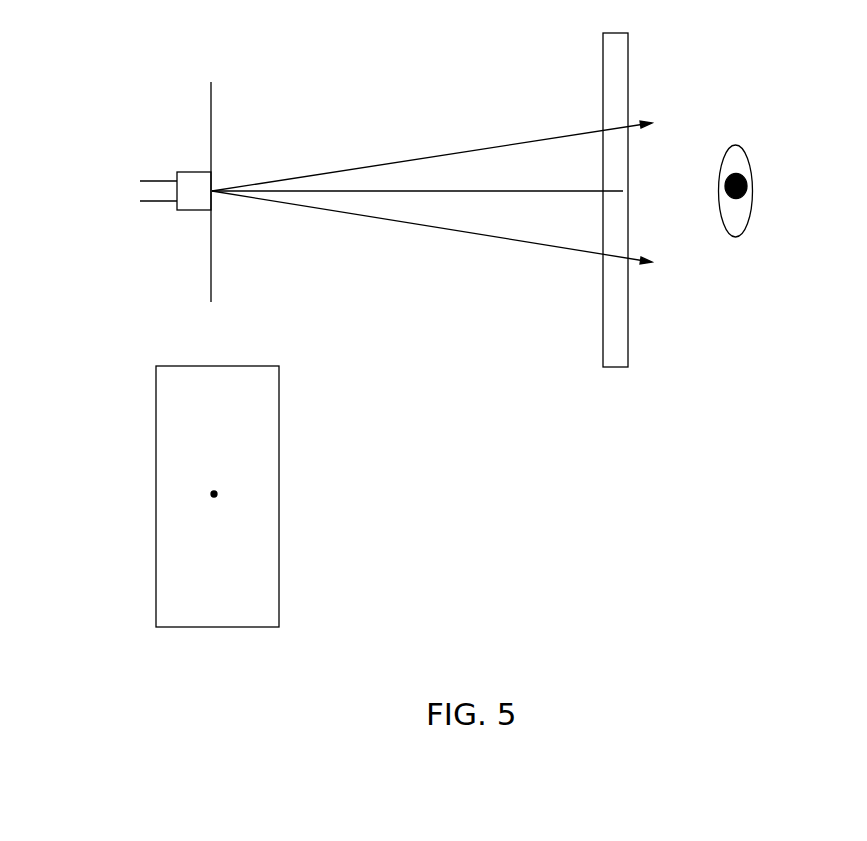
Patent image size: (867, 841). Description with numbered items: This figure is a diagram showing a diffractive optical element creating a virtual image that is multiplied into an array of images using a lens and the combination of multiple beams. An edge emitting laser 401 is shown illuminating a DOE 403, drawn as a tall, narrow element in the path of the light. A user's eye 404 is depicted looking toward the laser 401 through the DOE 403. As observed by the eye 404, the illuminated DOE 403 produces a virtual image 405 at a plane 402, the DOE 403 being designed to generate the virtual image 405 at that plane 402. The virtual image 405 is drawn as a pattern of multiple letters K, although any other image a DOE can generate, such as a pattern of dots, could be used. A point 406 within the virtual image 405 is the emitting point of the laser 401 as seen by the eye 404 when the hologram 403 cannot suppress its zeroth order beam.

The edge emitting laser 401 is at (192, 211).
The plane 402 is at (212, 107).
The DOE 403 is at (629, 63).
The user's eye 404 is at (752, 183).
The virtual image 405 is at (280, 552).
The point 406 is at (230, 492).